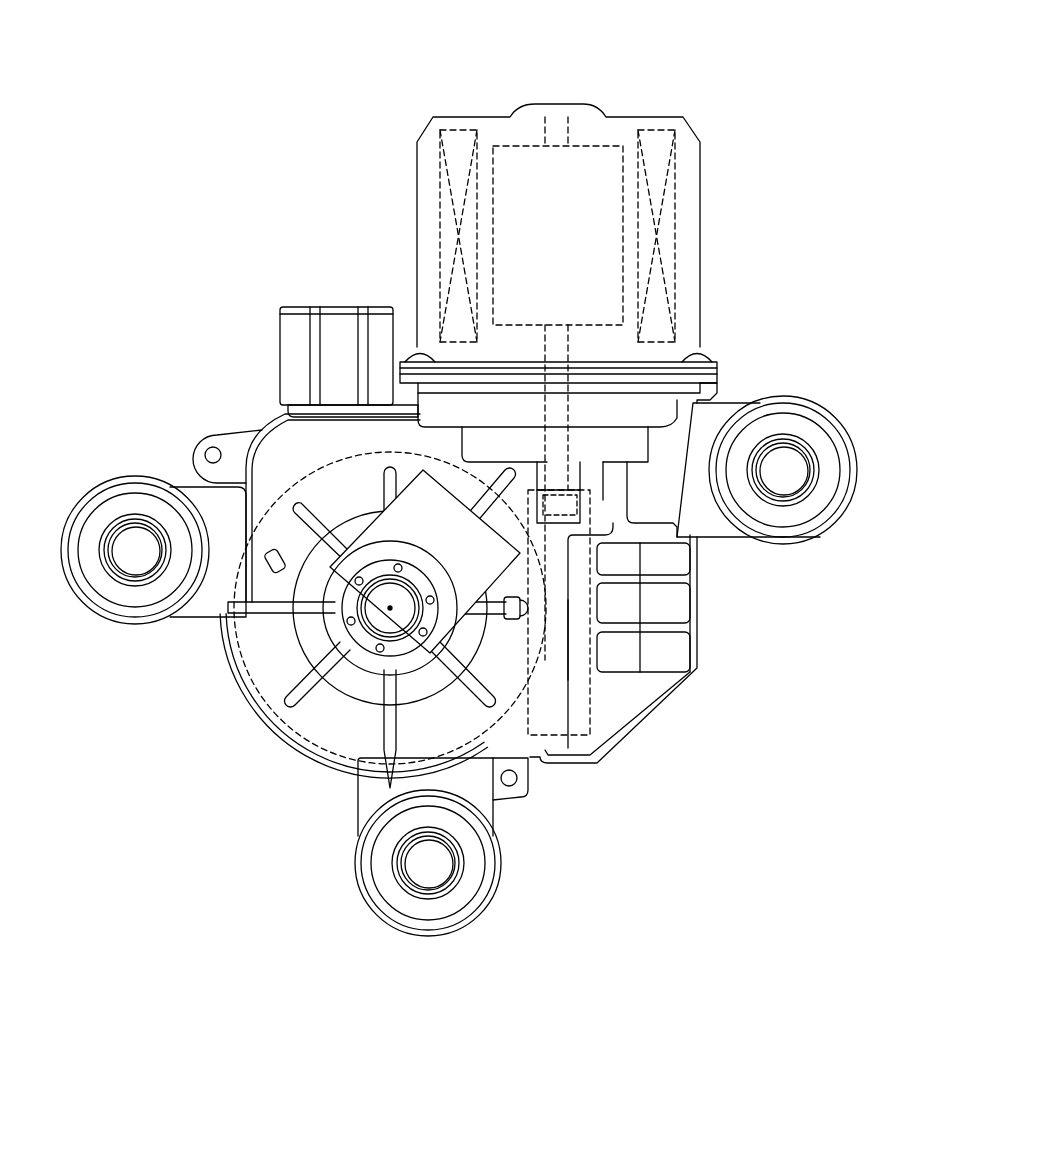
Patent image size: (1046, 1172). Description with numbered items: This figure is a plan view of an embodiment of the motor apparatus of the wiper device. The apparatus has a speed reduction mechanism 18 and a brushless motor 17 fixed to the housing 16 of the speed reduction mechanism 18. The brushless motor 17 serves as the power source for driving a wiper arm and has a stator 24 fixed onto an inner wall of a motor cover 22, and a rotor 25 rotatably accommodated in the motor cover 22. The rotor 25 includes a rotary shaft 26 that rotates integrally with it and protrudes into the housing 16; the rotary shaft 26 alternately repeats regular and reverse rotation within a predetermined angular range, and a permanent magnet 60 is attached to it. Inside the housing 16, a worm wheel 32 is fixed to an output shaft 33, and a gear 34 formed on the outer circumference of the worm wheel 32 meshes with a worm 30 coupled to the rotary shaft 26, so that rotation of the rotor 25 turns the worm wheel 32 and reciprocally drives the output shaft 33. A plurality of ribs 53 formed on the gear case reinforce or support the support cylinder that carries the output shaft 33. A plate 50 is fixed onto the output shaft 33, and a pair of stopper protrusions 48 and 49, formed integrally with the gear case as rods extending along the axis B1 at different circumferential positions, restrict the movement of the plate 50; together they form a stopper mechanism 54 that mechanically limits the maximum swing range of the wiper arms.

The housing 16 is at (254, 398).
The brushless motor 17 is at (424, 163).
The speed reduction mechanism 18 is at (592, 718).
The motor cover 22 is at (423, 203).
The stator 24 is at (455, 128).
The rotor 25 is at (601, 163).
The rotary shaft 26 is at (580, 345).
The worm 30 is at (585, 717).
The worm wheel 32 is at (318, 770).
The output shaft 33 is at (368, 612).
The gear 34 is at (345, 645).
The stopper protrusion 48 is at (266, 558).
The stopper protrusion 49 is at (558, 691).
The plate 50 is at (475, 484).
The ribs 53 is at (305, 508).
The stopper mechanism 54 is at (600, 682).
The permanent magnet 60 is at (600, 541).
The axis B1 is at (388, 612).